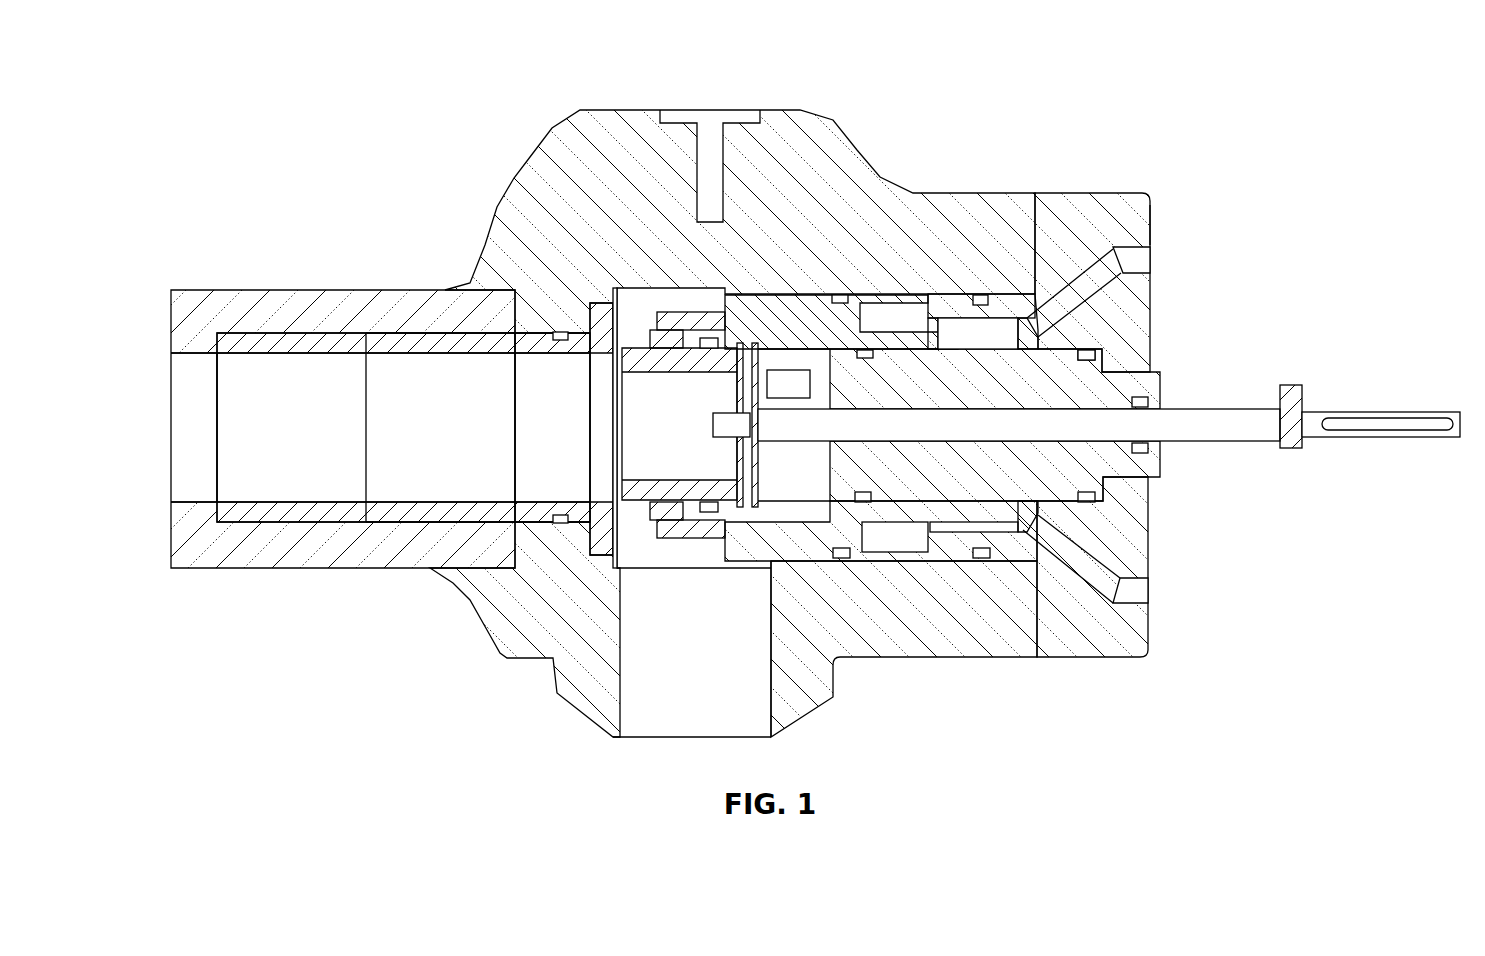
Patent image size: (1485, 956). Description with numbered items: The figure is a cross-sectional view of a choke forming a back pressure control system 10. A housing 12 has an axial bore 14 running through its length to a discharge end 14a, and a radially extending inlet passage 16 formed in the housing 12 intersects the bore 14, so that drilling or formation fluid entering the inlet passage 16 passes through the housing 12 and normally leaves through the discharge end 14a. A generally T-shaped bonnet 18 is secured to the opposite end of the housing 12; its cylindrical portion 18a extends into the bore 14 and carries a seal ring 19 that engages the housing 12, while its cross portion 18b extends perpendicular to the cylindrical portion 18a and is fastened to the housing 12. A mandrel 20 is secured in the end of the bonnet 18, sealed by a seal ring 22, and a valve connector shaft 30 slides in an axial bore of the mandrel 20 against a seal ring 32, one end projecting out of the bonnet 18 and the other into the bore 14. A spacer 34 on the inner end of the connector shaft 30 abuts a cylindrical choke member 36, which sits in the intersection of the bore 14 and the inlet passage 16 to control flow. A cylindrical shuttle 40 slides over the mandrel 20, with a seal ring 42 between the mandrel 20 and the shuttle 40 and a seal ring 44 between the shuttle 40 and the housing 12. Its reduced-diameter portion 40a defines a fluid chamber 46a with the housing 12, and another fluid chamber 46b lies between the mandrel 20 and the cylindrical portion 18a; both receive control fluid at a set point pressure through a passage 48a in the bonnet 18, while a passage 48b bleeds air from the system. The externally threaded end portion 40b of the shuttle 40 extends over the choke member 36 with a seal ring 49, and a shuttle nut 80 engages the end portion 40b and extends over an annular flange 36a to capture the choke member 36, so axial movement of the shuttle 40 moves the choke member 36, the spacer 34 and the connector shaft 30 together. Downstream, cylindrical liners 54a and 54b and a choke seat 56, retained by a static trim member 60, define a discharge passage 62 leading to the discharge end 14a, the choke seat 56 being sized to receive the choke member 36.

The back pressure control system 10 is at (496, 83).
The housing 12 is at (640, 108).
The axial bore 14 is at (186, 452).
The discharge end 14a is at (188, 502).
The inlet passage 16 is at (677, 690).
The bonnet 18 is at (1094, 190).
The cylindrical portion 18a is at (953, 512).
The cross portion 18b is at (1140, 226).
The seal ring 19 is at (988, 300).
The mandrel 20 is at (1172, 457).
The seal ring 22 is at (1067, 358).
The valve connector shaft 30 is at (1250, 408).
The seal ring 32 is at (1150, 400).
The spacer 34 is at (735, 395).
The choke member 36 is at (655, 535).
The annular flange 36a is at (653, 535).
The shuttle 40 is at (840, 296).
The reduced-diameter portion 40a is at (890, 508).
The end portion 40b is at (703, 540).
The seal ring 42 is at (867, 495).
The seal ring 44 is at (920, 293).
The fluid chamber 46a is at (917, 313).
The fluid chamber 46b is at (1013, 337).
The passage 48a is at (1150, 590).
The passage 48b is at (1150, 250).
The seal ring 49 is at (591, 303).
The cylindrical liner 54a is at (267, 340).
The cylindrical liner 54b is at (423, 337).
The choke seat 56 is at (522, 326).
The static trim member 60 is at (527, 525).
The discharge passage 62 is at (380, 457).
The shuttle nut 80 is at (673, 540).